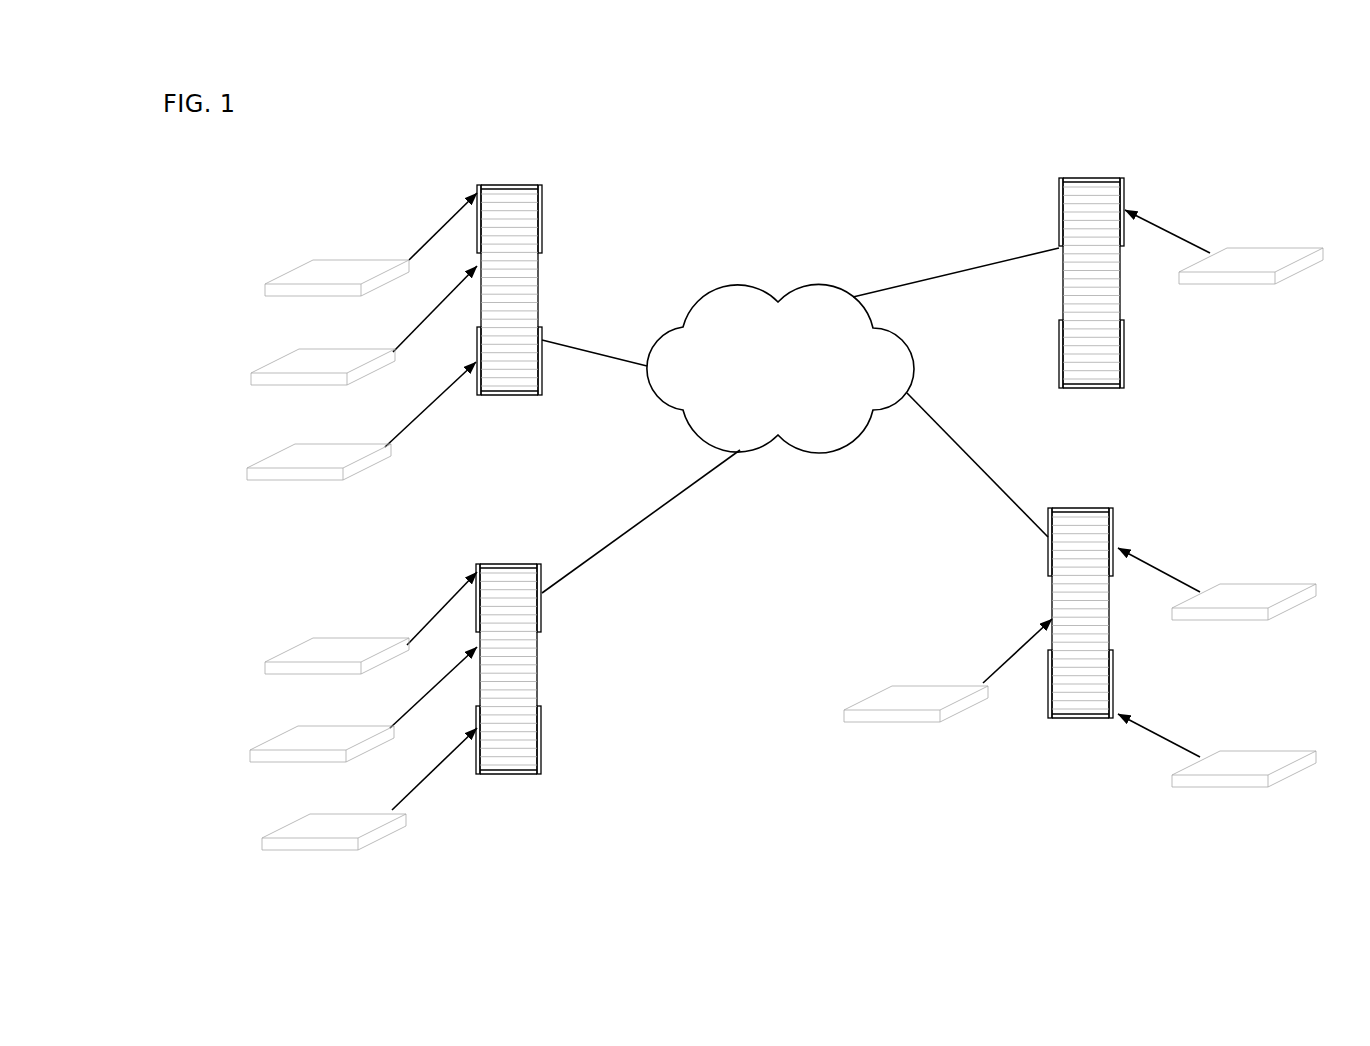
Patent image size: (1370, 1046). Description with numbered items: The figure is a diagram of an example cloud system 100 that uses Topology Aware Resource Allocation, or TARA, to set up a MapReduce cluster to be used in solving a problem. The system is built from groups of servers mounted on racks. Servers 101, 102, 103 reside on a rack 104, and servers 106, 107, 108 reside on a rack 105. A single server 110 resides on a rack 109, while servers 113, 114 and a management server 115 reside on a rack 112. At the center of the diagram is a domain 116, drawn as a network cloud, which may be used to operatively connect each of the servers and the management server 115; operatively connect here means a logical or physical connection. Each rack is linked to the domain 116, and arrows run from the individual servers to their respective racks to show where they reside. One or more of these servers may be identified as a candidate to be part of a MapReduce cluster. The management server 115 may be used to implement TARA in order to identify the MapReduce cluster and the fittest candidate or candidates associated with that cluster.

The cloud system 100 is at (1316, 134).
The server 101 is at (343, 260).
The server 102 is at (290, 325).
The server 103 is at (290, 420).
The rack 104 is at (510, 185).
The rack 105 is at (507, 565).
The server 106 is at (342, 637).
The server 107 is at (290, 705).
The server 108 is at (300, 795).
The rack 109 is at (1092, 178).
The server 110 is at (1257, 245).
The rack 112 is at (1082, 510).
The server 113 is at (1250, 583).
The server 114 is at (1250, 750).
The management server 115 is at (923, 687).
The domain 116 is at (738, 285).